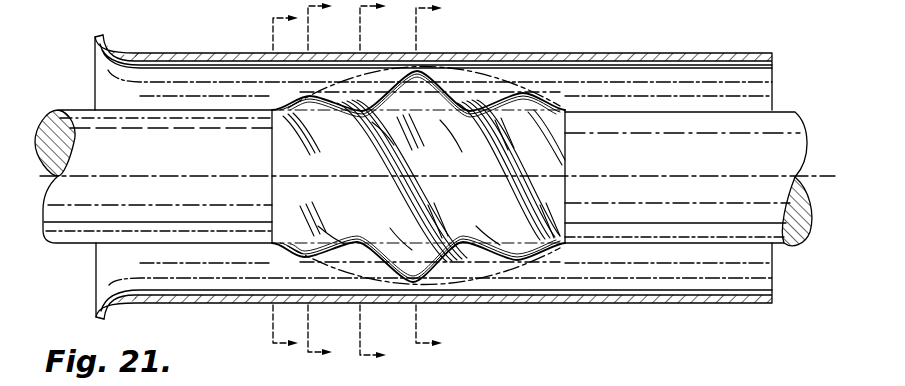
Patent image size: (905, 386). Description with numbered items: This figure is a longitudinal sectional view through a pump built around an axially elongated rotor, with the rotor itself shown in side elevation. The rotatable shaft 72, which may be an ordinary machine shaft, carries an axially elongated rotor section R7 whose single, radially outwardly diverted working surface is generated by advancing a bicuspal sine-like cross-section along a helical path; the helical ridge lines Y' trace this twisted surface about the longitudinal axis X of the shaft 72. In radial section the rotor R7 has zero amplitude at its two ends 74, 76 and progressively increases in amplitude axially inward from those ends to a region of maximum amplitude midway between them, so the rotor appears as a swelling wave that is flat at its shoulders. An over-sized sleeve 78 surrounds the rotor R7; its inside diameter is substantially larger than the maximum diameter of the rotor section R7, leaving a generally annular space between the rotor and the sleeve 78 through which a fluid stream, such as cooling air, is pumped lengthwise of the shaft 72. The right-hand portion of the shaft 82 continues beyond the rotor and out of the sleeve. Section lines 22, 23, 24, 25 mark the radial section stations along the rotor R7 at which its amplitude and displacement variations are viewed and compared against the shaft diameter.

The rotatable shaft 72 is at (88, 130).
The end of rotor section 74 is at (272, 109).
The end of rotor section 76 is at (571, 113).
The over-sized sleeve 78 is at (605, 303).
The rod (right portion) 82 is at (776, 114).
The rotor section R7 is at (430, 100).
The longitudinal axis X is at (704, 177).
The helical ridge Y' is at (424, 181).
The section line 22 is at (270, 185).
The section line 23 is at (307, 186).
The section line 24 is at (361, 189).
The section line 25 is at (416, 184).